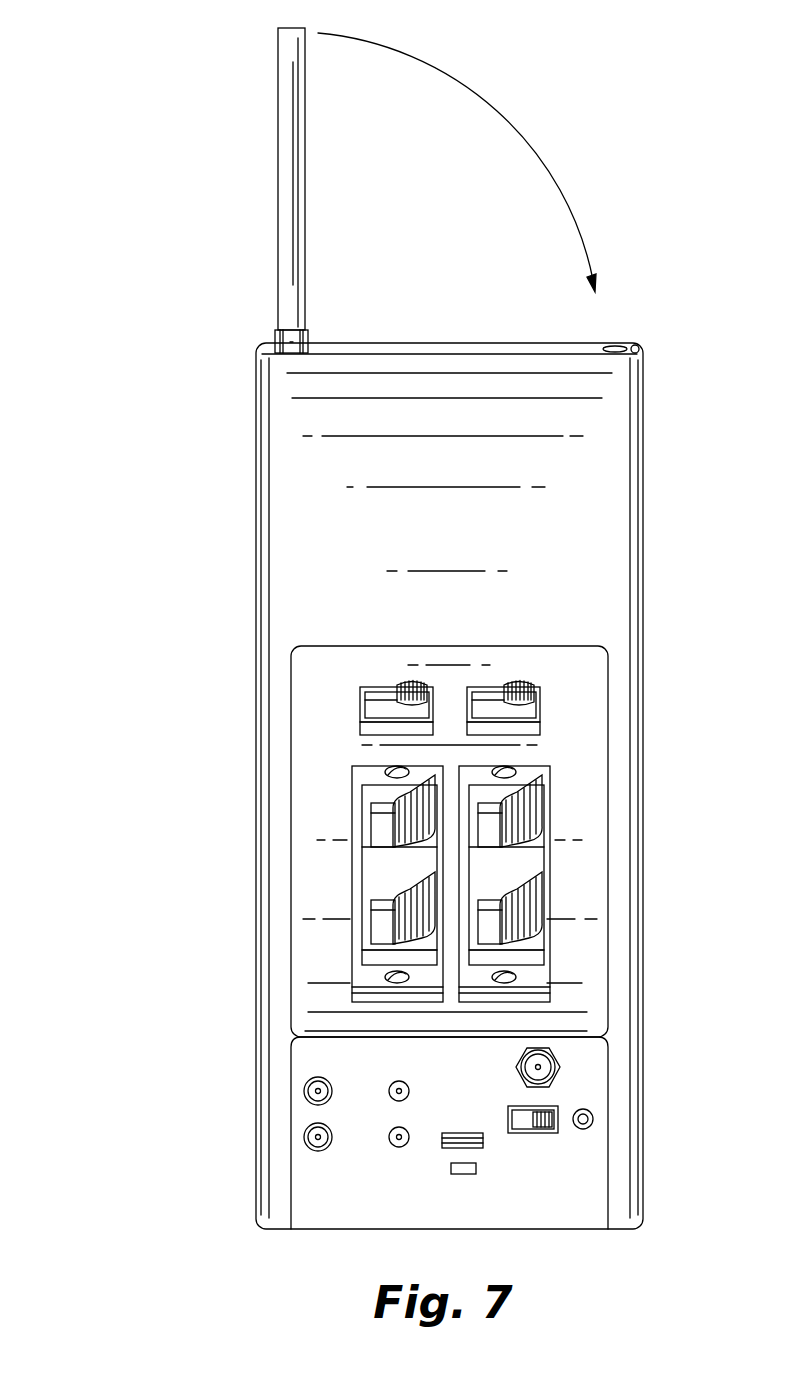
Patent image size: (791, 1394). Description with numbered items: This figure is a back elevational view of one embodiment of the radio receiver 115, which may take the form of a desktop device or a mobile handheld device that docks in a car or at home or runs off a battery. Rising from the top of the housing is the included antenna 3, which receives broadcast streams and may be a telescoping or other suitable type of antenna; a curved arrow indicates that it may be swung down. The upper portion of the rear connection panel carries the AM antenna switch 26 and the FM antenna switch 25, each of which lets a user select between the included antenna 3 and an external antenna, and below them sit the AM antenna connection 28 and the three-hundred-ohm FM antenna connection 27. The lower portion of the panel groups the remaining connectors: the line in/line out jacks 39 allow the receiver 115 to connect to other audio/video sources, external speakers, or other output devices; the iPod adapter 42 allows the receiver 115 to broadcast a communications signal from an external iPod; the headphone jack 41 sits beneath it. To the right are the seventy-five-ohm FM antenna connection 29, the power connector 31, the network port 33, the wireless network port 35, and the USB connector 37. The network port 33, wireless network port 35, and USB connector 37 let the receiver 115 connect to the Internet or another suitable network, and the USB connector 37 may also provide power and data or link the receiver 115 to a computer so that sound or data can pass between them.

The receiver 115 is at (153, 145).
The included antenna 3 is at (282, 113).
The AM antenna switch 26 is at (360, 704).
The FM antenna switch 25 is at (540, 704).
The AM antenna connection 28 is at (352, 815).
The 300 ohm FM antenna connection 27 is at (550, 815).
The line in/line out jacks 39 is at (306, 1131).
The iPod adapter 42 is at (388, 1091).
The headphone jack 41 is at (389, 1137).
The 75 ohm FM antenna connection 29 is at (518, 1068).
The power connector 31 is at (593, 1114).
The network port 33 is at (532, 1135).
The wireless network port 35 is at (440, 1142).
The USB connector 37 is at (468, 1176).